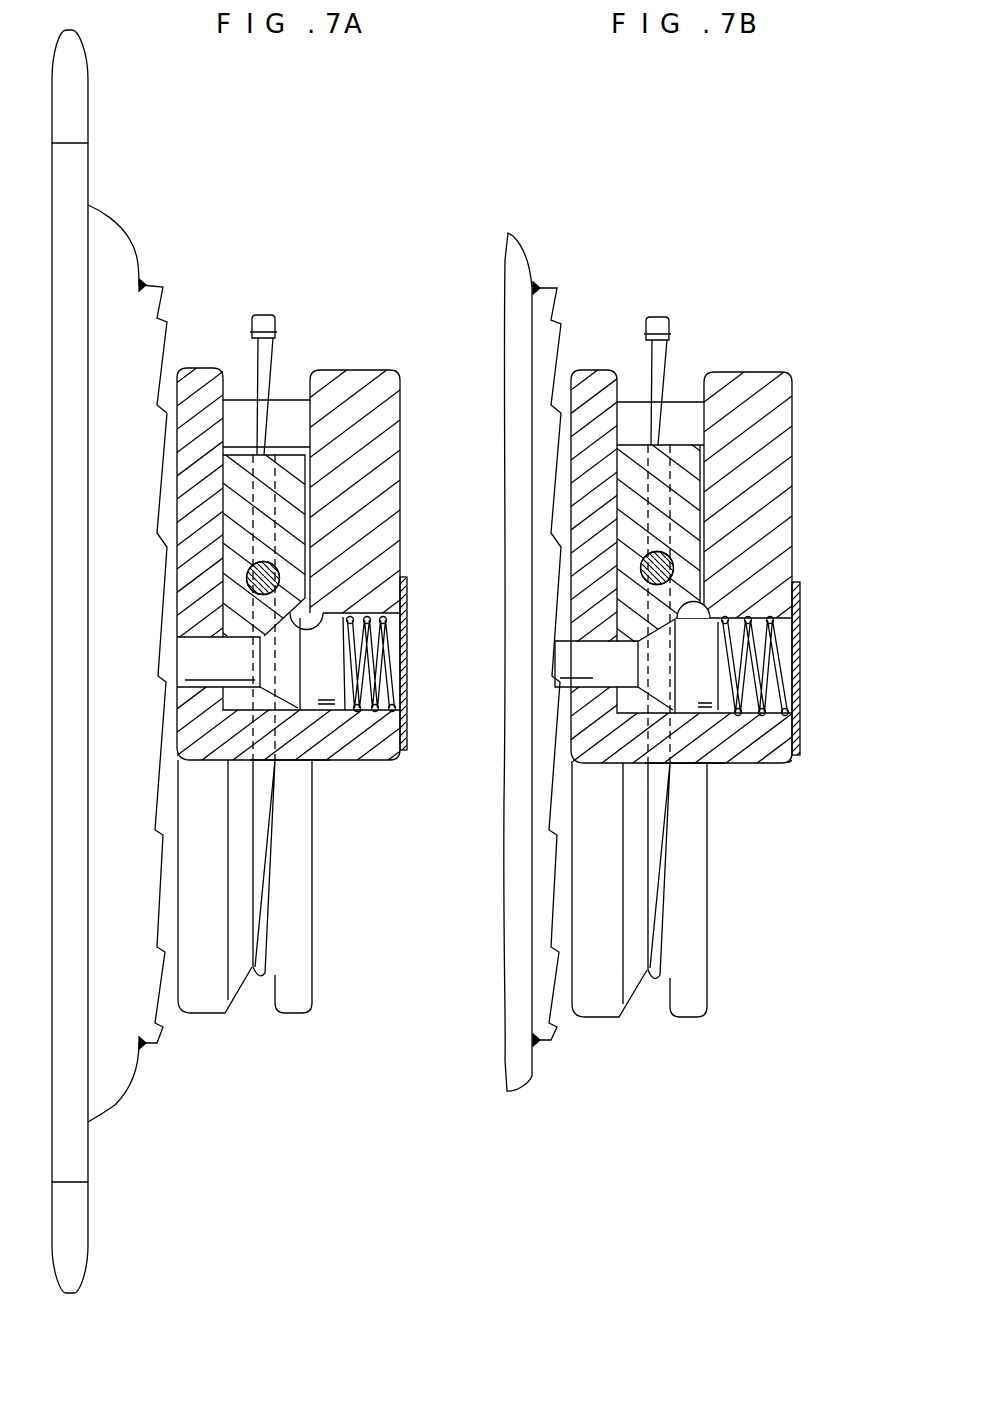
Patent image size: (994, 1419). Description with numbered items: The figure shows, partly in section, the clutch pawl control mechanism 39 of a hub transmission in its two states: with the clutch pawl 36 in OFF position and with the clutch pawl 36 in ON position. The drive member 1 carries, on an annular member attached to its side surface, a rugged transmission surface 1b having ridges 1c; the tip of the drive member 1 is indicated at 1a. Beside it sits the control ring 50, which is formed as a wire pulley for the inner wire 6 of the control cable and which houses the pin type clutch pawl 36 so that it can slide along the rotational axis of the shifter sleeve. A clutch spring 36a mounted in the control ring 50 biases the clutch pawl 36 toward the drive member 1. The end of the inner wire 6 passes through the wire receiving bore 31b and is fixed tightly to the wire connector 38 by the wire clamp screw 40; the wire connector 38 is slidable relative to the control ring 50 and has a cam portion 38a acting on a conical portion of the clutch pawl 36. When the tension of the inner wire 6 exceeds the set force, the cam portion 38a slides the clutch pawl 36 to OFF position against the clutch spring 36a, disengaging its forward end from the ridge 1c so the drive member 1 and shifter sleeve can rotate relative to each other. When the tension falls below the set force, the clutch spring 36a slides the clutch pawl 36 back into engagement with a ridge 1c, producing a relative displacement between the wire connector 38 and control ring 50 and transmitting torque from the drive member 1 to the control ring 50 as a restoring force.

In FIG. 7A, the drive member 1 is at (118, 232).
In FIG. 7B, the drive member 1 is at (527, 247).
In FIG. 7A, the shaft tip 1a is at (82, 98).
In FIG. 7A, the rugged transmission surface 1b is at (165, 357).
In FIG. 7B, the rugged transmission surface 1b is at (562, 357).
In FIG. 7A, the ridge 1c is at (160, 380).
In FIG. 7B, the ridge 1c is at (562, 360).
In FIG. 7A, the inner wire 6 is at (263, 907).
In FIG. 7B, the inner wire 6 is at (681, 350).
In FIG. 7A, the wire receiving bore 31b is at (287, 762).
In FIG. 7B, the wire receiving bore 31b is at (683, 763).
In FIG. 7A, the clutch pawl 36 is at (193, 658).
In FIG. 7B, the clutch pawl 36 is at (576, 665).
In FIG. 7A, the clutch spring 36a is at (384, 650).
In FIG. 7B, the clutch spring 36a is at (778, 663).
In FIG. 7A, the wire connector 38 is at (288, 473).
In FIG. 7B, the wire connector 38 is at (685, 450).
In FIG. 7A, the cam portion 38a is at (292, 626).
In FIG. 7B, the cam portion 38a is at (694, 608).
In FIG. 7A, the clutch pawl control mechanism 39 is at (342, 720).
In FIG. 7B, the clutch pawl control mechanism 39 is at (788, 488).
In FIG. 7A, the wire clamp screw 40 is at (282, 568).
In FIG. 7B, the wire clamp screw 40 is at (672, 564).
In FIG. 7A, the control ring 50 is at (360, 366).
In FIG. 7B, the control ring 50 is at (768, 366).